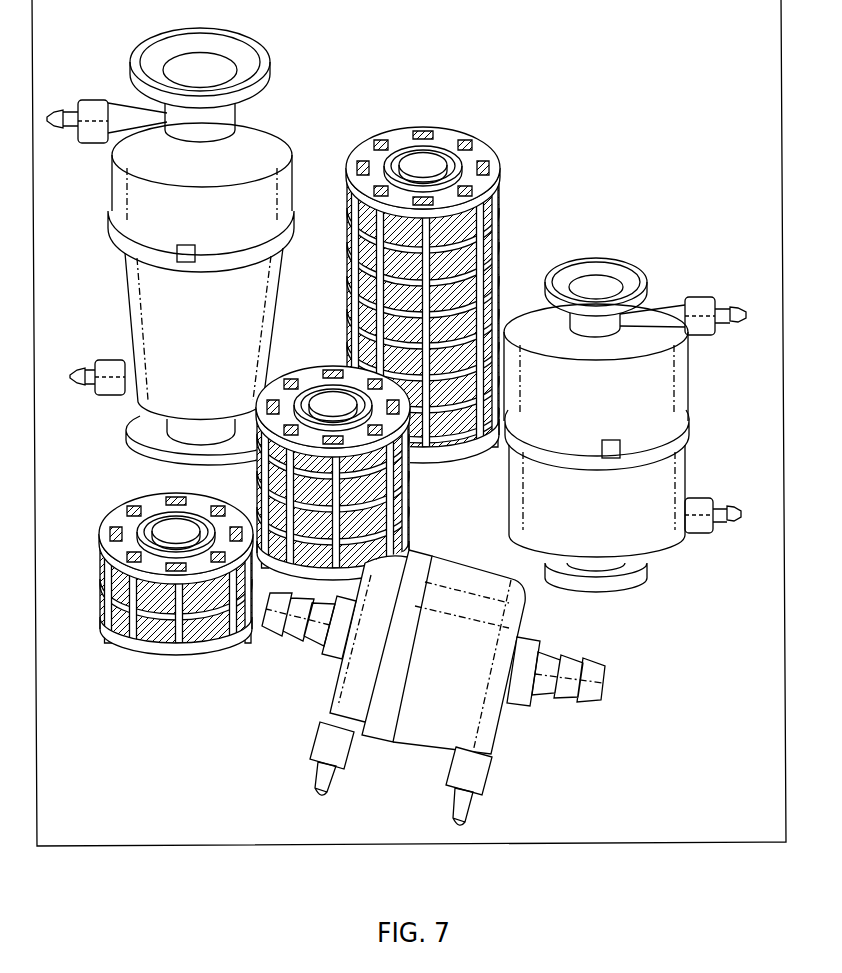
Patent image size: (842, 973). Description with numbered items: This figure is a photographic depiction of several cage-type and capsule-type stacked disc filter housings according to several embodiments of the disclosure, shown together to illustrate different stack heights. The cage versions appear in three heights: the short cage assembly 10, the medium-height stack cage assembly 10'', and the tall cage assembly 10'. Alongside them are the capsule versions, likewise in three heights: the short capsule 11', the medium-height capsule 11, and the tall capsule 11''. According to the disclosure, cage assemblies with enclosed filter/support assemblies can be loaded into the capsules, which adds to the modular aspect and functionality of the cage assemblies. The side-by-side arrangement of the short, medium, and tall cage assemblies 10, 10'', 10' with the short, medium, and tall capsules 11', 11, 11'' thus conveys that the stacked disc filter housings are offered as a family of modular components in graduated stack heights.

The short cage assembly 10 is at (154, 574).
The tall cage assembly 10' is at (448, 279).
The medium-height stack cage assembly 10'' is at (359, 473).
The medium-height capsule 11 is at (625, 425).
The short capsule 11' is at (433, 687).
The tall capsule 11'' is at (194, 246).